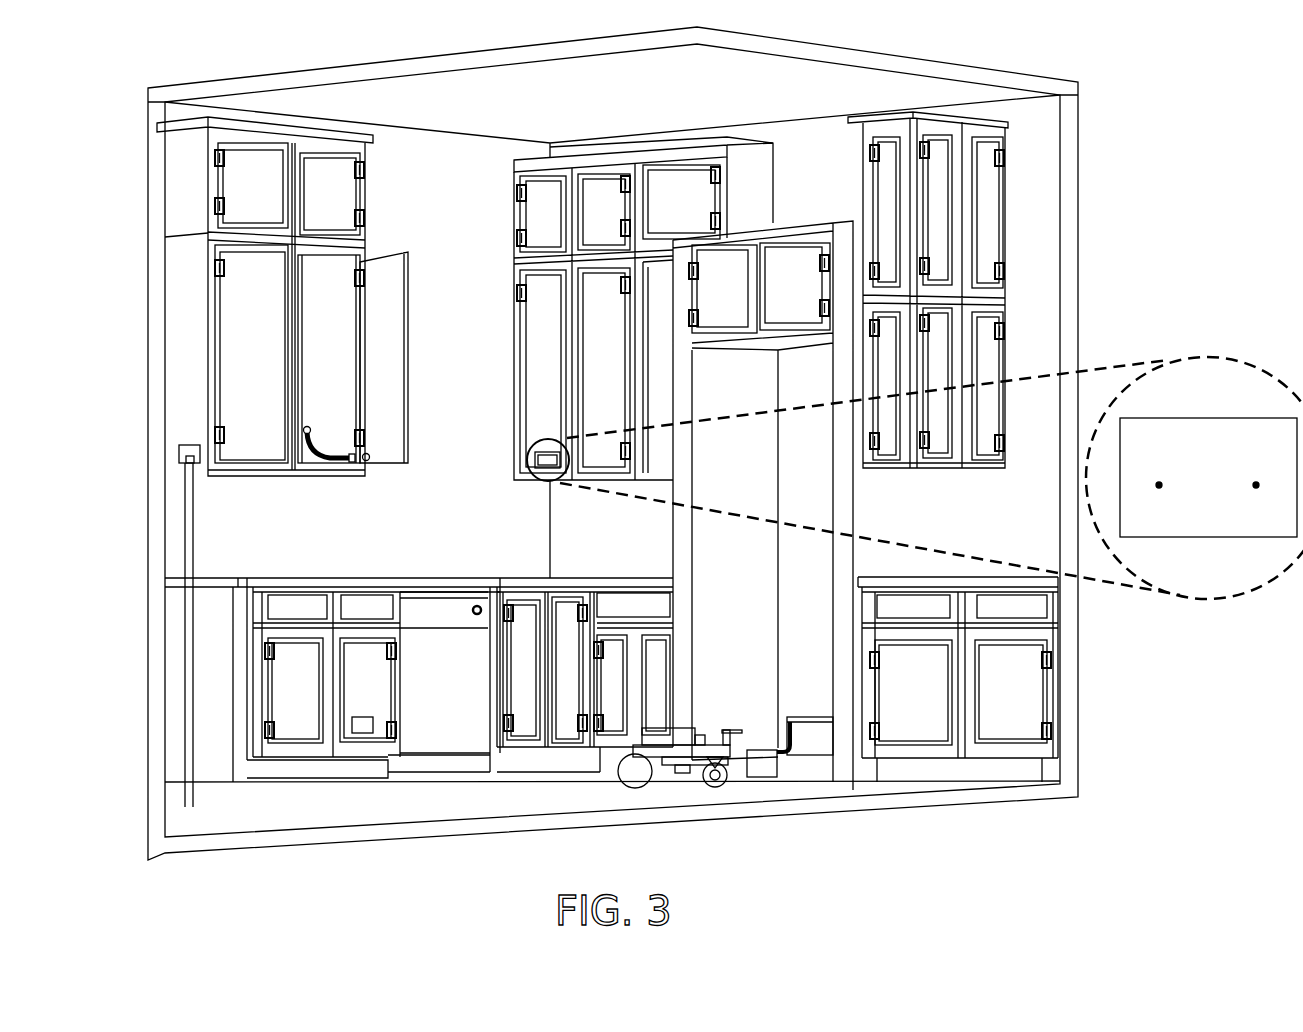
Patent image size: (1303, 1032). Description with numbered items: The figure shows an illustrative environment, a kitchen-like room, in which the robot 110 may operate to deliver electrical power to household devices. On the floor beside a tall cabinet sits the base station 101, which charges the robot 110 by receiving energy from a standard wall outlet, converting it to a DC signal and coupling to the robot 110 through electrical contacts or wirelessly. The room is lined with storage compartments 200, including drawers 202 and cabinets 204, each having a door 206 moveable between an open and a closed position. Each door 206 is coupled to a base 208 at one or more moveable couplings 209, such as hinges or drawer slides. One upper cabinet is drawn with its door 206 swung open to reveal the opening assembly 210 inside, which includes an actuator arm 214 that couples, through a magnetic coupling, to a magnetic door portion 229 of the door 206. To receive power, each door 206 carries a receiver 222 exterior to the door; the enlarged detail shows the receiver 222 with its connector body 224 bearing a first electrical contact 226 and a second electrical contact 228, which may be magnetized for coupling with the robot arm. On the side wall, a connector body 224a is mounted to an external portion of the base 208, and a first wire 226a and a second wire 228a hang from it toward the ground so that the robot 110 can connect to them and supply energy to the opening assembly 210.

The base station 101 is at (818, 717).
The robot 110 is at (715, 723).
The storage compartments 200 is at (563, 733).
The drawer 202 is at (295, 603).
The cabinet 204 is at (512, 313).
The door 206 is at (537, 358).
The base 208 is at (173, 338).
The moveable coupling 209 is at (213, 268).
The opening assembly 210 is at (303, 415).
The actuator arm 214 is at (325, 450).
The receiver 222 is at (532, 458).
The connector body 224 is at (1202, 428).
The connector body 224a is at (178, 450).
The first electrical contact 226 is at (1256, 485).
The first wire 226a is at (185, 543).
The second electrical contact 228 is at (1159, 485).
The second wire 228a is at (193, 537).
The magnetic door portion 229 is at (366, 461).